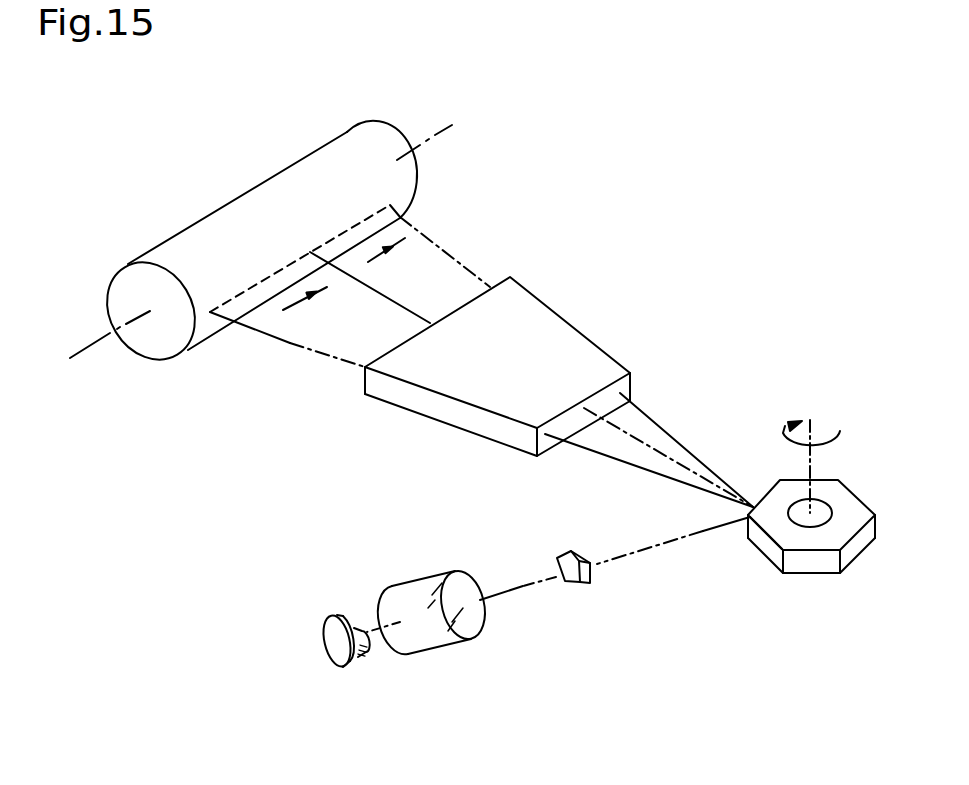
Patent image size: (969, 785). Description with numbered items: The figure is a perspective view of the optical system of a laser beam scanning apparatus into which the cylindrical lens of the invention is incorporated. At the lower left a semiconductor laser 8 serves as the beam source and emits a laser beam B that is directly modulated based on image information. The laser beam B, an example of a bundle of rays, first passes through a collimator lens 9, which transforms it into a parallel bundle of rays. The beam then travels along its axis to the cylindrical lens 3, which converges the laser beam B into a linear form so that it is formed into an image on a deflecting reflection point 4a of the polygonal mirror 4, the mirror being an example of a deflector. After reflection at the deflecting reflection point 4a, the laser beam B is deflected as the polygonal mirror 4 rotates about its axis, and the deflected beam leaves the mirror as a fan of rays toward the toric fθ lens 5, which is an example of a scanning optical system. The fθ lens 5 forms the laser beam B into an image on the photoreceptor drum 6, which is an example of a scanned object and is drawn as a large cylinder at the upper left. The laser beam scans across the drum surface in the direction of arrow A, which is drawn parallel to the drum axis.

The cylindrical lens 3 is at (568, 580).
The polygonal mirror 4 is at (777, 492).
The deflecting reflection point 4a is at (803, 567).
The fθ lens 5 is at (567, 337).
The photoreceptor drum 6 is at (165, 340).
The semiconductor laser 8 is at (337, 667).
The collimator lens 9 is at (435, 640).
The arrow A is at (344, 286).
The laser beam B is at (508, 585).